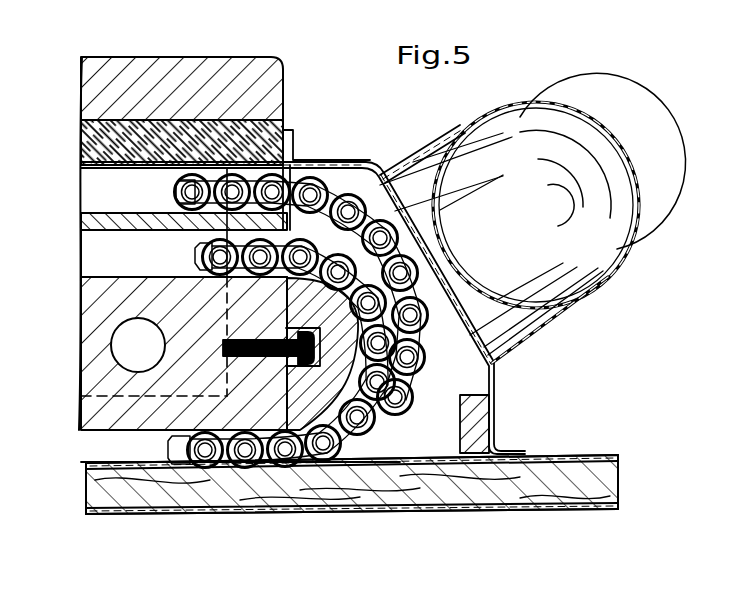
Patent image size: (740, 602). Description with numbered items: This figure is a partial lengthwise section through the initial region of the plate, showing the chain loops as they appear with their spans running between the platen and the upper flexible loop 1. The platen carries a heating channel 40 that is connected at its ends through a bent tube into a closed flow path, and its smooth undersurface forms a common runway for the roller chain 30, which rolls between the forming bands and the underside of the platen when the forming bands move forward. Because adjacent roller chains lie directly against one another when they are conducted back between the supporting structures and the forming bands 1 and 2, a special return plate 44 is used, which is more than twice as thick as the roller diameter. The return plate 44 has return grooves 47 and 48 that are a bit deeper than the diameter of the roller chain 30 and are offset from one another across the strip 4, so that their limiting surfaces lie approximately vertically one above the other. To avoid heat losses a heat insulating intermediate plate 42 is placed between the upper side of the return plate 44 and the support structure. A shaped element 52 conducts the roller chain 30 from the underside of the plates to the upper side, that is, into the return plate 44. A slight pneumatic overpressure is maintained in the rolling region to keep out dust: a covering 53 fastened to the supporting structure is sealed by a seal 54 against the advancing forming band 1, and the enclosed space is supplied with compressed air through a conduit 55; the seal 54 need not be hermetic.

The upper flexible loop 1 is at (88, 470).
The forming band 2 is at (88, 513).
The strip 4 is at (93, 488).
The roller chain 30 is at (343, 193).
The heating channel 40 is at (105, 345).
The heat insulating intermediate plate 42 is at (181, 150).
The return plate 44 is at (310, 185).
The return groove 47 is at (288, 158).
The return groove 48 is at (120, 247).
The shaped element 52 is at (386, 183).
The covering 53 is at (497, 368).
The seal 54 is at (437, 512).
The conduit 55 is at (563, 104).